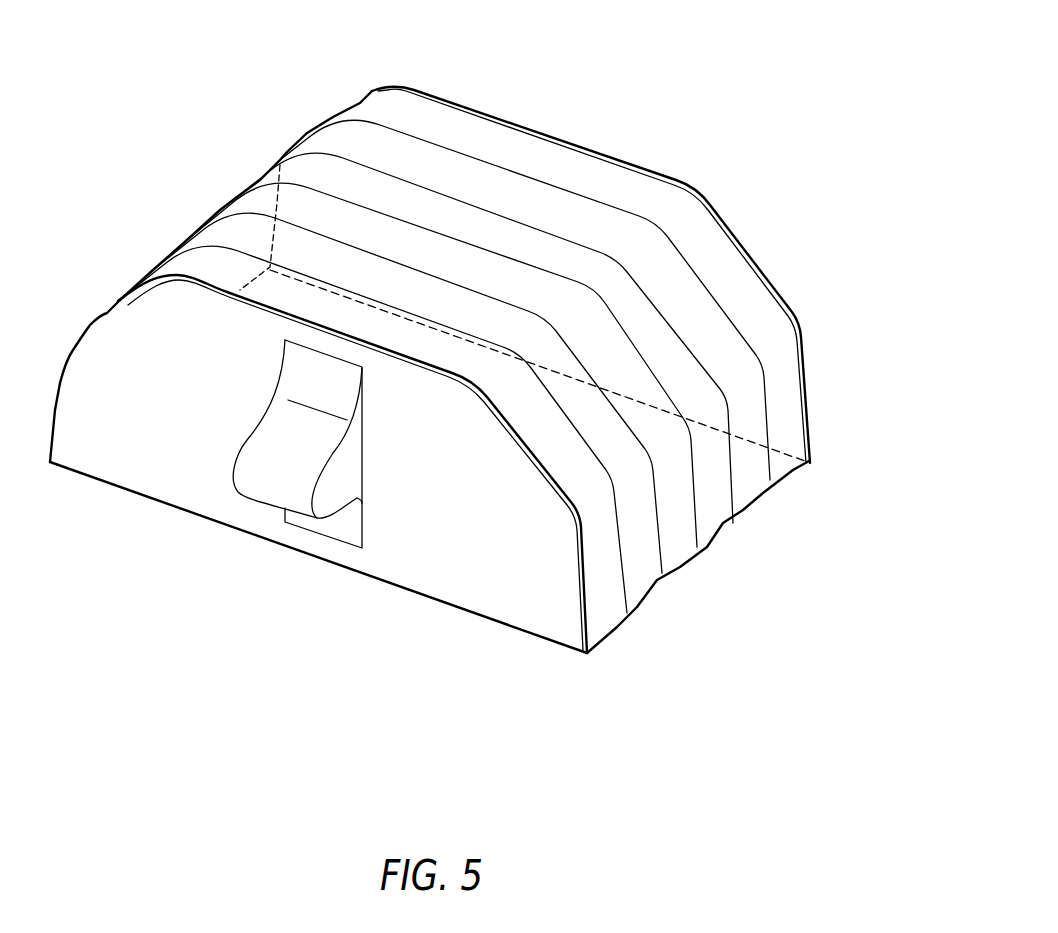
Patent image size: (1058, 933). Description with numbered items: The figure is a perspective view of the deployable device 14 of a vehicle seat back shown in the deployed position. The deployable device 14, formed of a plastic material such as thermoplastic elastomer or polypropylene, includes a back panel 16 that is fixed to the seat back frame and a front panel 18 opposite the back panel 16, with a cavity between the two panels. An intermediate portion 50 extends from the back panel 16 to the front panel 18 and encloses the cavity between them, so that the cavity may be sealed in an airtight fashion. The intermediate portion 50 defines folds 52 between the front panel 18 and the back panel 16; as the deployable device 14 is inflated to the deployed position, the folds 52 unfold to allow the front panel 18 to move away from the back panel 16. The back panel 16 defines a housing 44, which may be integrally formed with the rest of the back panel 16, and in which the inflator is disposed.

The deployable device 14 is at (630, 51).
The back panel 16 is at (167, 458).
The front panel 18 is at (615, 157).
The housing 44 is at (275, 487).
The intermediate portion 50 is at (222, 207).
The folds 52 is at (630, 595).